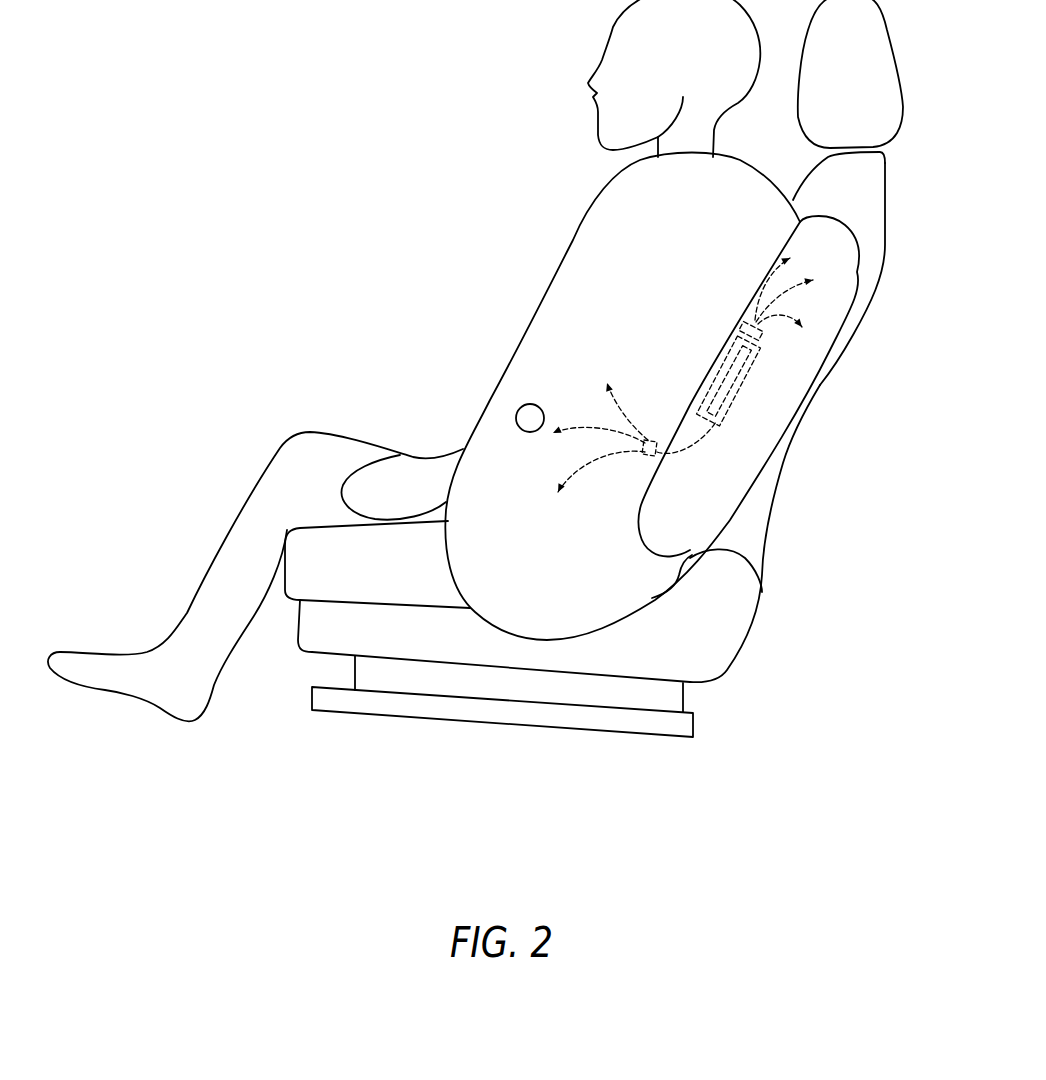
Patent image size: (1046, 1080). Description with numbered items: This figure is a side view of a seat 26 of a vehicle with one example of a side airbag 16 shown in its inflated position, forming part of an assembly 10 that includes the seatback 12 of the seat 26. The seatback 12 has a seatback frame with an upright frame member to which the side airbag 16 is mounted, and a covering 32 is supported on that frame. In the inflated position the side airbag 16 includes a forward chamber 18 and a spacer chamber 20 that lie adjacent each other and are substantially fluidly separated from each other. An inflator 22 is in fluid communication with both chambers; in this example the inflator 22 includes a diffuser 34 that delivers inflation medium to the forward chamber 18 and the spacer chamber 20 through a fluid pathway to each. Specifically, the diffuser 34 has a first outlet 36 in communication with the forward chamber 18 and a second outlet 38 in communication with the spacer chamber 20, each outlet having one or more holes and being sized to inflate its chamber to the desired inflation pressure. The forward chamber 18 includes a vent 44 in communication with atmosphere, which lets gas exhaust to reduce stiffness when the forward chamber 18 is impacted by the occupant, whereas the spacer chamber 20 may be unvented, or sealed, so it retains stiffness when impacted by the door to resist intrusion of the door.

The assembly 10 is at (620, 383).
The seatback 12 is at (783, 468).
The side airbag 16 is at (528, 285).
The forward chamber 18 is at (523, 588).
The spacer chamber 20 is at (680, 533).
The inflator 22 is at (742, 360).
The seat 26 is at (892, 220).
The covering 32 is at (843, 180).
The diffuser 34 is at (685, 455).
The first outlet 36 is at (648, 439).
The second outlet 38 is at (747, 318).
The vent 44 is at (522, 405).